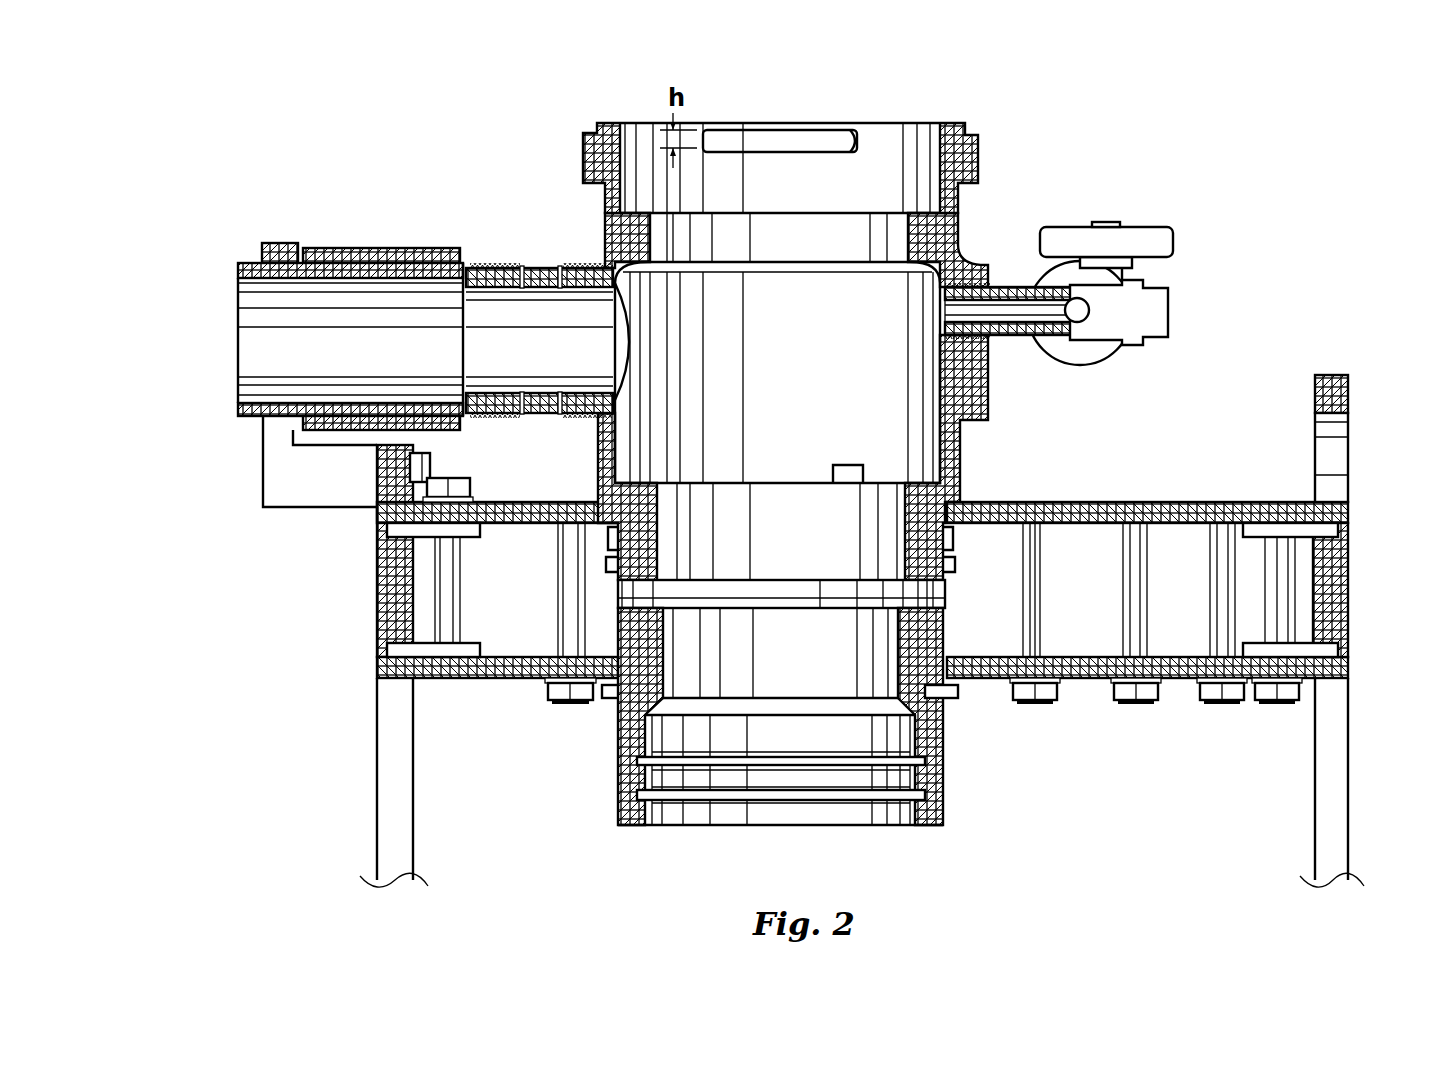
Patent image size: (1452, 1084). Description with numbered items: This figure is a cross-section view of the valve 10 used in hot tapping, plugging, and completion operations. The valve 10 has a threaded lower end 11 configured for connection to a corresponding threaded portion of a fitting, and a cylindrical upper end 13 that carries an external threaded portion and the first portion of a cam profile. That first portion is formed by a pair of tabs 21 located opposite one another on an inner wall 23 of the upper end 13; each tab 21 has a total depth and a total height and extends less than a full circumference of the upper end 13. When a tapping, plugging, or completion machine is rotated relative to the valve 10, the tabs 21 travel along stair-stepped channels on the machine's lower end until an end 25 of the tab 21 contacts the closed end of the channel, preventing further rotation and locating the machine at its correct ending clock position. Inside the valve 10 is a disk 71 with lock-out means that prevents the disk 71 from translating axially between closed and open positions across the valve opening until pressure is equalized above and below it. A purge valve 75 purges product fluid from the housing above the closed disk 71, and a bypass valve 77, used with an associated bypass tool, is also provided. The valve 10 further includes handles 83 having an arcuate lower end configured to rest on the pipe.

The valve 10 is at (563, 205).
The threaded lower end 11 is at (680, 797).
The upper end 13 is at (982, 132).
The tab 21 is at (785, 128).
The inner wall 23 is at (811, 191).
The end of tab 25 is at (862, 147).
The disk 71 is at (777, 603).
The purge valve 75 is at (1147, 292).
The bypass valve 77 is at (237, 408).
The handle 83 is at (1348, 378).